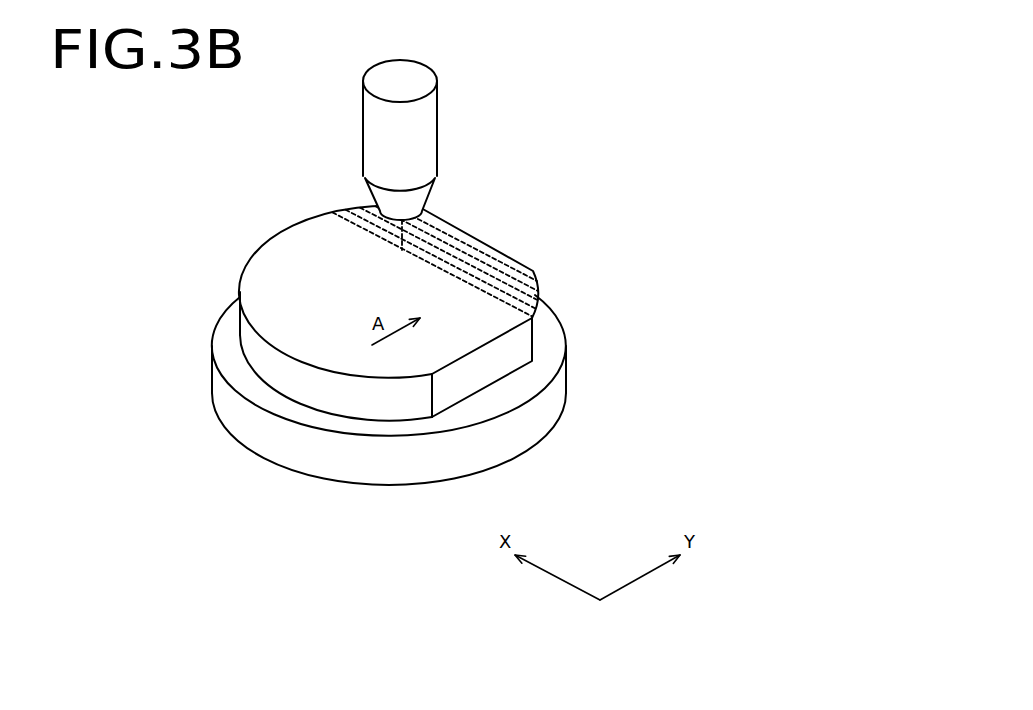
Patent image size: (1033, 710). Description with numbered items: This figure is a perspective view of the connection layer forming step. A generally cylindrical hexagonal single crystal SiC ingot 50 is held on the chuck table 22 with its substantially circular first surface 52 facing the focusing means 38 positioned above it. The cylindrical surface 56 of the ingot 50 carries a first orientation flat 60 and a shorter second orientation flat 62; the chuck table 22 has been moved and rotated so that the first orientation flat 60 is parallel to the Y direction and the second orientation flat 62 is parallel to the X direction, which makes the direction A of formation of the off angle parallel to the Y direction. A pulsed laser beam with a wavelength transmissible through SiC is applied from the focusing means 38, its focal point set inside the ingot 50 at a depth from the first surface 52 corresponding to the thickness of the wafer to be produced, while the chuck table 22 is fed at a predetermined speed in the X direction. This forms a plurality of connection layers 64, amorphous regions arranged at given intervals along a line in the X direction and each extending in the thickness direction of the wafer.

The chuck table 22 is at (508, 455).
The focusing means 38 is at (428, 140).
The hexagonal single crystal SiC ingot 50 is at (389, 298).
The first surface 52 is at (262, 275).
The cylindrical surface 56 is at (263, 358).
The first orientation flat 60 is at (500, 363).
The second orientation flat 62 is at (442, 254).
The connection layers 64 is at (510, 288).